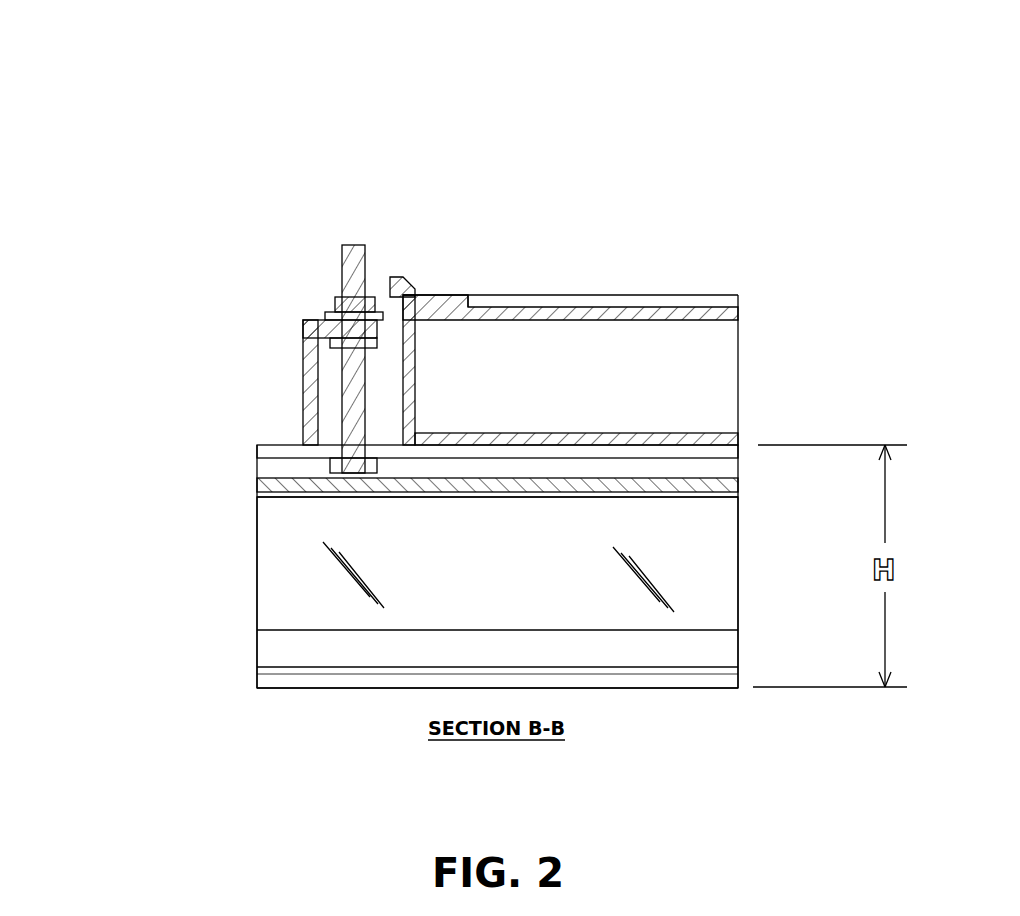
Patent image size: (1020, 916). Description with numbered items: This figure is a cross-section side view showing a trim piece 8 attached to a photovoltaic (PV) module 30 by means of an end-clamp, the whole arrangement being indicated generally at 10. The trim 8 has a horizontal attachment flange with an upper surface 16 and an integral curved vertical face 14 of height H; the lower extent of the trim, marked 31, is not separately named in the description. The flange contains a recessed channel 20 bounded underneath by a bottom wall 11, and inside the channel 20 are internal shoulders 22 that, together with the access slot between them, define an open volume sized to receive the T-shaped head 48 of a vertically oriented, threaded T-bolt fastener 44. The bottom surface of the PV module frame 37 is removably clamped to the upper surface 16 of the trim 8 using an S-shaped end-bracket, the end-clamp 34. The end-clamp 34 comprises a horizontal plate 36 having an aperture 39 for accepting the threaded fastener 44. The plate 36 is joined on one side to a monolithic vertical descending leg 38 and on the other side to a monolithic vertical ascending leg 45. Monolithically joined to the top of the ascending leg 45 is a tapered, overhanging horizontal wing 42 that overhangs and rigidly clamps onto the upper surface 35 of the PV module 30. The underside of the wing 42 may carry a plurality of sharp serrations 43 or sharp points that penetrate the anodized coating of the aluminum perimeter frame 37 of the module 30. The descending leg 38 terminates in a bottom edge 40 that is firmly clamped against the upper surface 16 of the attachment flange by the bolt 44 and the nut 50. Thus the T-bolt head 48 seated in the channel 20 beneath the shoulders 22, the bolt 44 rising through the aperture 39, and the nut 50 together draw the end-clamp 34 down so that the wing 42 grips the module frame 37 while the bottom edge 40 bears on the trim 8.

The mounting assembly 10 is at (157, 92).
The trim piece 8 is at (138, 548).
The curved vertical face 14 is at (505, 587).
The bottom surface 31 is at (273, 688).
The internal shoulders 22 is at (738, 447).
The bottom wall 11 is at (738, 484).
The upper surface 16 is at (269, 435).
The recessed channel 20 is at (273, 468).
The T-shaped head 48 is at (327, 472).
The upper surface of PV module 35 is at (564, 424).
The serrations 43 is at (425, 297).
The PV module frame 37 is at (532, 308).
The horizontal plate 36 is at (415, 350).
The overhanging horizontal wing 42 is at (405, 297).
The photovoltaic module 30 is at (584, 394).
The end-clamp 34 is at (340, 308).
The vertical descending member 38 is at (305, 380).
The bottom edge 40 is at (303, 445).
The threaded fastener 44 is at (357, 390).
The nut 50 is at (333, 300).
The aperture 39 is at (328, 318).
The vertical ascending member 45 is at (395, 297).